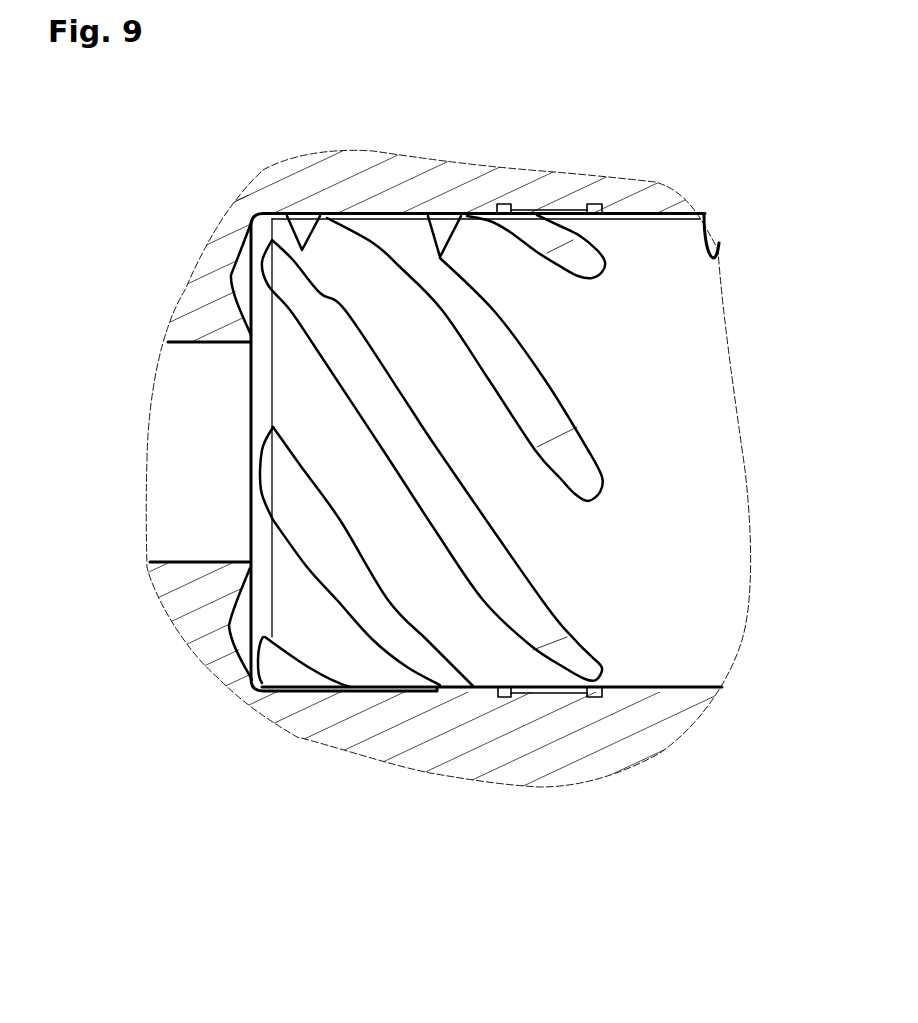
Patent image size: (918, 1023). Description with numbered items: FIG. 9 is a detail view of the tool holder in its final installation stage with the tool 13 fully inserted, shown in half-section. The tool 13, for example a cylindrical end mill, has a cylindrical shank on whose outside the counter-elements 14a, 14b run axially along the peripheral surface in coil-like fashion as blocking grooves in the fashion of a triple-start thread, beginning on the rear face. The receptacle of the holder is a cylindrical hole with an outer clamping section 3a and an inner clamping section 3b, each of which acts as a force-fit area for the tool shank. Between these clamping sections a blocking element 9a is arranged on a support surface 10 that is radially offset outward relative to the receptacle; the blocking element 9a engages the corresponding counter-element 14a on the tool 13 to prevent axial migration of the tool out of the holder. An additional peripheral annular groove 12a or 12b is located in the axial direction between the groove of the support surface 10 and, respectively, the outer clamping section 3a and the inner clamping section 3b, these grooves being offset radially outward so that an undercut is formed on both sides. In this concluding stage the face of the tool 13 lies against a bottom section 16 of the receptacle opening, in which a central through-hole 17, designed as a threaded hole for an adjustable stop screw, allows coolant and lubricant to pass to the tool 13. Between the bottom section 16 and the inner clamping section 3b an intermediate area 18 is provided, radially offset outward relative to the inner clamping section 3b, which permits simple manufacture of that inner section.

The outer clamping section 3a is at (718, 246).
The inner clamping section 3b is at (428, 216).
The blocking element 9a is at (580, 212).
The support surface 10 is at (513, 208).
The additional peripheral annular groove 12a is at (602, 208).
The additional peripheral annular groove 12b is at (508, 208).
The tool 13 is at (722, 620).
The counter-element 14a is at (404, 251).
The counter-element 14b is at (463, 540).
The bottom section 16 is at (245, 265).
The central through-hole 17 is at (172, 444).
The intermediate area 18 is at (290, 218).